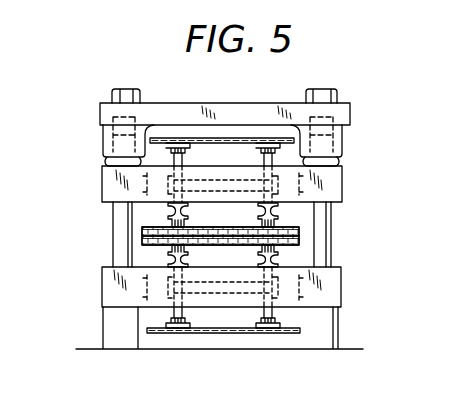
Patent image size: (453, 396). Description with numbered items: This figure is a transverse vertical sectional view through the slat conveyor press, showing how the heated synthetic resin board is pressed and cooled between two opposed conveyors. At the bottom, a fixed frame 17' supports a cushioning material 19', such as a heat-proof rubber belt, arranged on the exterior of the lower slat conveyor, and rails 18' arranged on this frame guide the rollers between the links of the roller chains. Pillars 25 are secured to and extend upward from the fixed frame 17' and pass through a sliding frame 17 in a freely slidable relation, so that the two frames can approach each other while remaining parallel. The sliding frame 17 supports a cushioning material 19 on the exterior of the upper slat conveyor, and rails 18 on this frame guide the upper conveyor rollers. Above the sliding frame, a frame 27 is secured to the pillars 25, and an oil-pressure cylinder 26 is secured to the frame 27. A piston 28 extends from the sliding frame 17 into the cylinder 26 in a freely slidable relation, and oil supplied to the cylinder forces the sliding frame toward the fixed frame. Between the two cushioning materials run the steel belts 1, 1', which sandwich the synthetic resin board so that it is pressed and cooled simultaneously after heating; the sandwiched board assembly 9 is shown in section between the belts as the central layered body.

The frame 27 is at (100, 106).
The oil-pressure cylinder 26 is at (103, 135).
The piston 28 is at (105, 159).
The sliding frame 17 is at (255, 184).
The fixed frame 17' is at (253, 289).
The cushioning material 19 is at (222, 122).
The cushioning material 19' is at (239, 346).
The rail 18 is at (223, 215).
The rail 18' is at (223, 258).
The pillar 25 is at (113, 219).
The laminate workpiece 9 is at (141, 233).
The steel belt 1 is at (256, 219).
The steel belt 1' is at (259, 254).